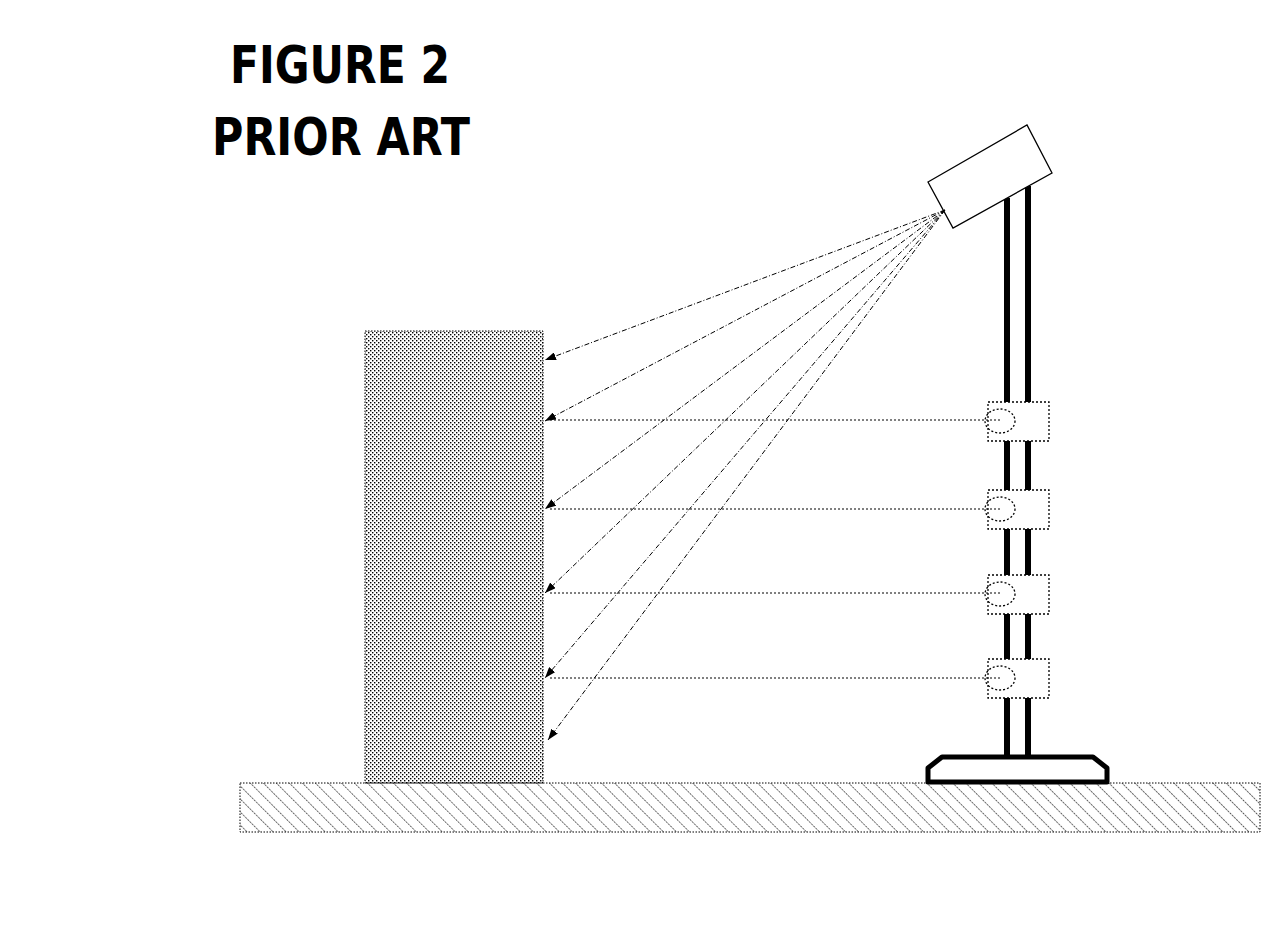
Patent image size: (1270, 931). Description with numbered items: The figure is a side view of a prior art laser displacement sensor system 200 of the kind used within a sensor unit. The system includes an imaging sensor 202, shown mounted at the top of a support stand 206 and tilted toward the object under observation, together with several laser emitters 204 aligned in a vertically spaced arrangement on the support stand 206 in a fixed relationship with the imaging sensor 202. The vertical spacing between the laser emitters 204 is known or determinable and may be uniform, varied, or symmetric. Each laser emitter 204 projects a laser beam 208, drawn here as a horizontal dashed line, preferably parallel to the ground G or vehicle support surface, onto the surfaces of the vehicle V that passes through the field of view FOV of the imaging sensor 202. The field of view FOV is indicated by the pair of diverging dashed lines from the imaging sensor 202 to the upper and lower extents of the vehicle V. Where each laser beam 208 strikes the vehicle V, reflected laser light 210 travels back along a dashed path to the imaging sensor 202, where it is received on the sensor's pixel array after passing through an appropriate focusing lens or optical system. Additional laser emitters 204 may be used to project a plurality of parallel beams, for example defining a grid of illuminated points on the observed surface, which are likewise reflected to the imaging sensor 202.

The laser displacement sensor system 200 is at (1080, 167).
The imaging sensor 202 is at (978, 147).
The laser emitter 204 is at (1058, 417).
The support stand 206 is at (1037, 300).
The laser beam 208 is at (837, 417).
The reflected laser light 210 is at (710, 333).
The field of view FOV is at (620, 323).
The vehicle V is at (398, 468).
The ground G is at (317, 797).